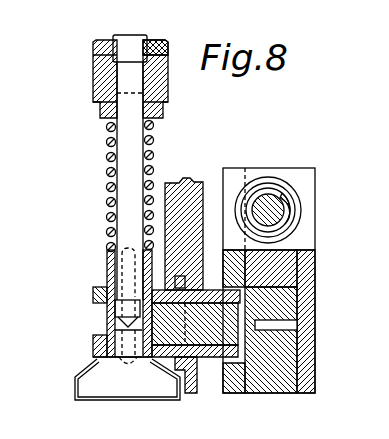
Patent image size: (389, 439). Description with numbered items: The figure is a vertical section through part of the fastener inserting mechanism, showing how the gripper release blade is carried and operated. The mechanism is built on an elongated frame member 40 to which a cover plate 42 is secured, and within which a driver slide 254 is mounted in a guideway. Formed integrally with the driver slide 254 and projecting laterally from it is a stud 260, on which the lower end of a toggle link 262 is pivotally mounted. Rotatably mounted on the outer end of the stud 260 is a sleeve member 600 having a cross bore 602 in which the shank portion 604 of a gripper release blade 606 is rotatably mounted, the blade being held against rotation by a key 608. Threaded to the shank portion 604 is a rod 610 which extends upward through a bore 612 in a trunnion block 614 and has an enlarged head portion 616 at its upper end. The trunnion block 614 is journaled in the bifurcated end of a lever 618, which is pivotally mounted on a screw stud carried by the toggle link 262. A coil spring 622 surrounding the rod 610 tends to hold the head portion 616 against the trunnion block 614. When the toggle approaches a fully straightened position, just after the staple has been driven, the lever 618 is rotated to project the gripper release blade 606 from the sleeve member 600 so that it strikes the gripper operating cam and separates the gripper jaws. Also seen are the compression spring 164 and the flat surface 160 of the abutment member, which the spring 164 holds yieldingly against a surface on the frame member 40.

The enlarged head portion 616 is at (128, 35).
The lever 618 is at (152, 42).
The trunnion block 614 is at (93, 90).
The bore 612 is at (170, 89).
The rod 610 is at (118, 163).
The coil spring 622 is at (107, 143).
The shank portion 604 is at (110, 258).
The key 608 is at (117, 273).
The cross bore 602 is at (107, 340).
The sleeve member 600 is at (100, 348).
The gripper release blade 606 is at (107, 402).
The toggle link 262 is at (205, 183).
The compression spring 164 is at (298, 191).
The flat surface 160 is at (292, 218).
The driver slide 254 is at (302, 276).
The frame member 40 is at (314, 378).
The stud 260 is at (203, 358).
The cover plate 42 is at (233, 394).